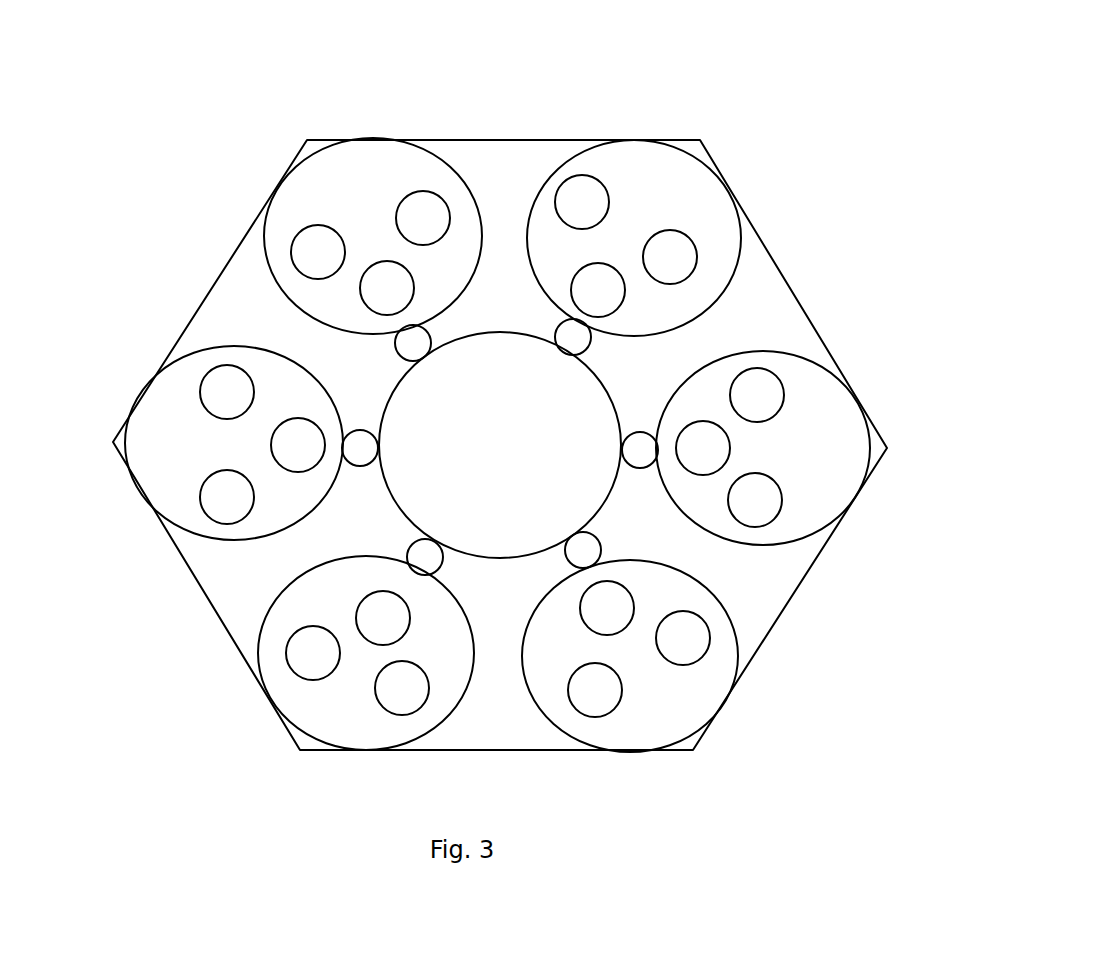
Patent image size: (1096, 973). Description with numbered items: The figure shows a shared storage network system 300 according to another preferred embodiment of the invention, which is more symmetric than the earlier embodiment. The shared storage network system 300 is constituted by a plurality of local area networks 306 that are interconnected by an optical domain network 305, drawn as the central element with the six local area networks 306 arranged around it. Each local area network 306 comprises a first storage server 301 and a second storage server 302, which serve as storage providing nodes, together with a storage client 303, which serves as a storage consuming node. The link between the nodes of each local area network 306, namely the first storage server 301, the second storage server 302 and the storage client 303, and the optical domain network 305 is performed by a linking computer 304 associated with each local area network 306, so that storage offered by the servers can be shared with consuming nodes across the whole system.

The shared storage network system 300 is at (775, 83).
The first storage server 301 is at (291, 250).
The second storage server 302 is at (425, 191).
The storage client 303 is at (386, 261).
The linking computer 304 is at (555, 337).
The optical domain network 305 is at (495, 559).
The local area network 306 is at (318, 150).